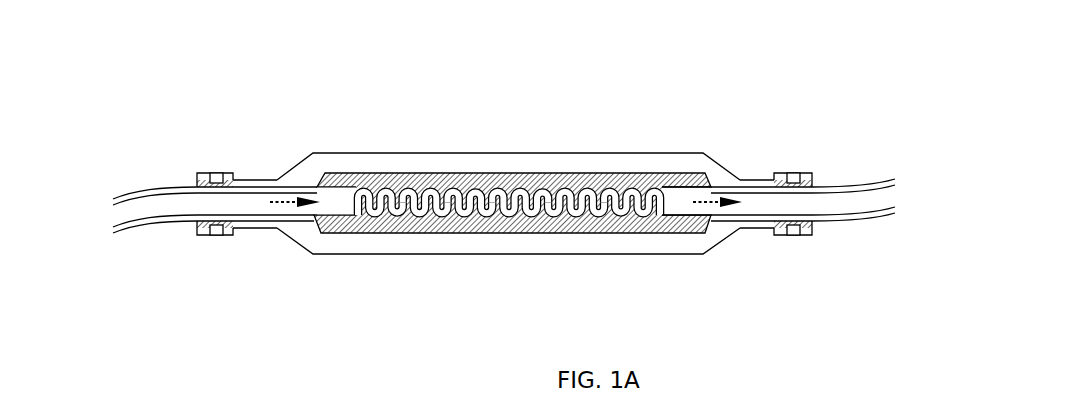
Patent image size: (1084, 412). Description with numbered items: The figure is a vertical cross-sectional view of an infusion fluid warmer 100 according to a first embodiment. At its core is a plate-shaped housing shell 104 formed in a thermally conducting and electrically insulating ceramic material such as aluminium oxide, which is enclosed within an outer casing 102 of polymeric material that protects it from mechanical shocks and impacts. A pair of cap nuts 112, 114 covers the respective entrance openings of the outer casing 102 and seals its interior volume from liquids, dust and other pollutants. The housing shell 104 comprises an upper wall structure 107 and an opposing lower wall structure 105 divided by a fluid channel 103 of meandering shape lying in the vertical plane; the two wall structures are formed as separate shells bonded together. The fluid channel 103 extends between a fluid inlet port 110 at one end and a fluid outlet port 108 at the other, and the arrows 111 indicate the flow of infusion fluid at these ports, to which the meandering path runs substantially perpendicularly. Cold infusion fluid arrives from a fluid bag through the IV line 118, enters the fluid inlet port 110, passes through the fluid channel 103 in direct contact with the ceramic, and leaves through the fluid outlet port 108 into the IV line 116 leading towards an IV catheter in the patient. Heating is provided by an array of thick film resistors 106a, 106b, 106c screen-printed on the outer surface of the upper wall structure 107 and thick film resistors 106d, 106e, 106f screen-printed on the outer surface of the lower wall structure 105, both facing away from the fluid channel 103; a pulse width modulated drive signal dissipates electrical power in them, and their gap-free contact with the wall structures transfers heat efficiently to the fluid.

The infusion fluid warmer 100 is at (228, 290).
The outer casing 102 is at (360, 152).
The fluid channel 103 is at (379, 233).
The housing shell 104 is at (685, 176).
The lower wall structure 105 is at (490, 233).
The thick film resistor 106a is at (383, 173).
The thick film resistor 106b is at (468, 173).
The thick film resistor 106c is at (575, 173).
The thick film resistor 106d is at (595, 233).
The thick film resistor 106e is at (505, 233).
The thick film resistor 106f is at (390, 233).
The upper wall structure 107 is at (563, 173).
The fluid outlet port 108 is at (688, 232).
The fluid inlet port 110 is at (330, 229).
The arrows 111 is at (283, 183).
The cap nut 112 is at (217, 173).
The cap nut 114 is at (795, 173).
The IV line 116 is at (820, 221).
The IV line 118 is at (181, 221).